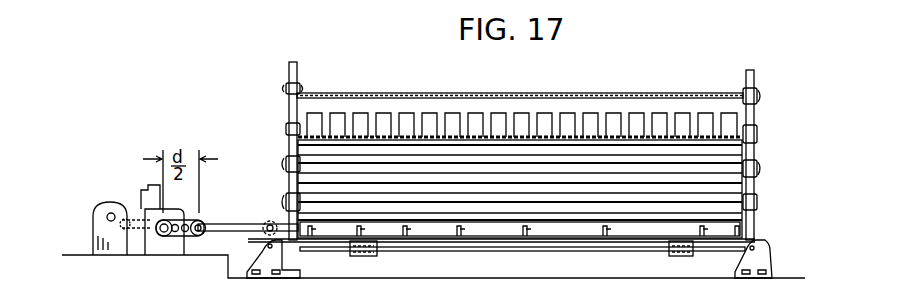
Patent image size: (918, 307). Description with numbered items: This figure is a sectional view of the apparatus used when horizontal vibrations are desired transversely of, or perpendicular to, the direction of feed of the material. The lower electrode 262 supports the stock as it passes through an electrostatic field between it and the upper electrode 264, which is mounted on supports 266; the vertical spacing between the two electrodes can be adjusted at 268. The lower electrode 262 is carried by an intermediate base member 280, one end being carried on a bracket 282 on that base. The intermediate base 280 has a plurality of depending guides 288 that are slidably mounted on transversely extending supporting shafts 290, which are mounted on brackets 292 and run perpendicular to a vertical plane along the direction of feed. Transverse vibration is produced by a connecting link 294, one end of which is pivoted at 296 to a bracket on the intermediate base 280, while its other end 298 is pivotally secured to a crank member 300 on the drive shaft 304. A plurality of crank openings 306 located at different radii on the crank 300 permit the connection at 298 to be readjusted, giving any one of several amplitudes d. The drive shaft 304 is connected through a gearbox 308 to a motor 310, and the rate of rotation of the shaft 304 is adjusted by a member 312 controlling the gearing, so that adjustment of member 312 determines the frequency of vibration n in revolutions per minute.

The lower electrode 262 is at (732, 133).
The upper electrode 264 is at (493, 94).
The supports 266 is at (297, 66).
The adjustment means 268 is at (288, 96).
The intermediate base member 280 is at (735, 228).
The bracket 282 is at (287, 150).
The depending guides 288 is at (366, 256).
The supporting shafts 290 is at (493, 250).
The brackets 292 is at (278, 273).
The connecting link 294 is at (232, 212).
The pivot 296 is at (271, 221).
The other end of connecting rod 298 is at (200, 221).
The crank member 300 is at (191, 236).
The drive shaft 304 is at (160, 232).
The crank openings 306 is at (186, 236).
The gearbox 308 is at (148, 214).
The motor 310 is at (106, 219).
The member controlling the gearing 312 is at (145, 205).